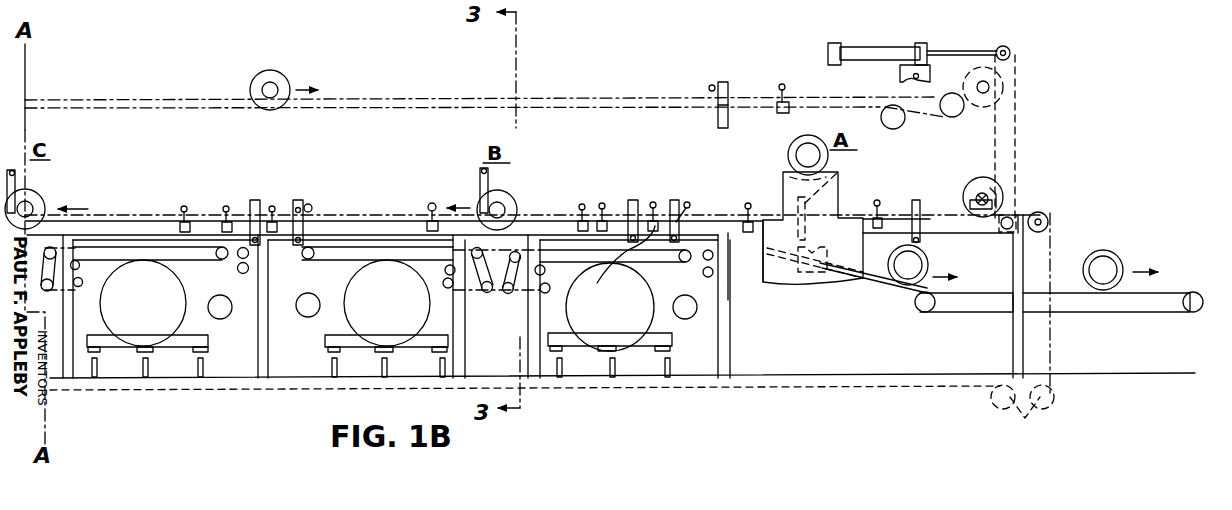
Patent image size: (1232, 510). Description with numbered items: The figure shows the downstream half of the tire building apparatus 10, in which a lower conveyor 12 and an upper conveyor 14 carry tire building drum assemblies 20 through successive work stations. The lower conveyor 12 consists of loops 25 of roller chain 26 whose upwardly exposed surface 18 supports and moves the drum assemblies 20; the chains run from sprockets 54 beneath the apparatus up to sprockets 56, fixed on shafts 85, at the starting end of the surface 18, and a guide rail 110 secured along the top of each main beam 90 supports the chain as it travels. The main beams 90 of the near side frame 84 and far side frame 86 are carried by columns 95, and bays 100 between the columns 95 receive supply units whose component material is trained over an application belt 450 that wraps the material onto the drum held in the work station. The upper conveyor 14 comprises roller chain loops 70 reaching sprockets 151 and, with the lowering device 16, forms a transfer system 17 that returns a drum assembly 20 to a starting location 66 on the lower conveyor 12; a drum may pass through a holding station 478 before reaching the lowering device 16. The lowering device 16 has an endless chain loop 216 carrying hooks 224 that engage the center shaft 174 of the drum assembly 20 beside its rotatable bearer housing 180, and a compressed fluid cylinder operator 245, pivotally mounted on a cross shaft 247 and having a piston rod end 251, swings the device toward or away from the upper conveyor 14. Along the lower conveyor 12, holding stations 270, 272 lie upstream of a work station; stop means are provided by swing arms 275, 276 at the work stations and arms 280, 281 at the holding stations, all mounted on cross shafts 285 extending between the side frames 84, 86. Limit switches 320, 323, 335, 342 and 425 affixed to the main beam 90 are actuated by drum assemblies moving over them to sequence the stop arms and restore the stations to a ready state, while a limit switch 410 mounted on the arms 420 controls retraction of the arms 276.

The tire building apparatus 10 is at (548, 95).
The lower conveyor 12 is at (350, 214).
The upper conveyor 14 is at (414, 96).
The lowering device 16 is at (1018, 125).
The transfer system 17 is at (596, 96).
The upwardly exposed surface 18 is at (1012, 215).
The tire building drum assembly 20 is at (278, 70).
The loops 25 is at (688, 390).
The roller chain 26 is at (398, 214).
The sprockets 54 is at (1025, 418).
The sprockets 56 is at (1046, 222).
The starting location 66 is at (893, 195).
The roller chain loops 70 is at (176, 98).
The near side frame 84 is at (1017, 270).
The shafts 85 is at (1038, 215).
The far side frame 86 is at (1018, 355).
The main beam 90 is at (735, 227).
The columns 95 is at (70, 372).
The bays 100 is at (173, 360).
The guide rail 110 is at (144, 220).
The sprockets 151 is at (952, 116).
The central coaxial shaft 174 is at (1000, 200).
The housing 180 is at (262, 90).
The endless chain loop 216 is at (1017, 93).
The hooks 224 is at (983, 190).
The compressed fluid cylinder operator 245 is at (897, 47).
The cross shaft 247 is at (900, 75).
The piston rod end 251 is at (1000, 47).
The holding station 270 is at (674, 200).
The holding station 272 is at (644, 199).
The swing arm 275 is at (838, 175).
The swing arm 276 is at (484, 170).
The arm 280 is at (687, 203).
The arm 281 is at (650, 203).
The cross shafts 285 is at (805, 236).
The limit switch 320 is at (740, 186).
The limit switch 323 is at (626, 264).
The limit switch 335 is at (600, 203).
The limit switch 342 is at (580, 205).
The limit switch 410 is at (310, 205).
The arms 420 is at (297, 213).
The limit switch 425 is at (433, 204).
The application belt 450 is at (170, 243).
The holding station 478 is at (722, 80).